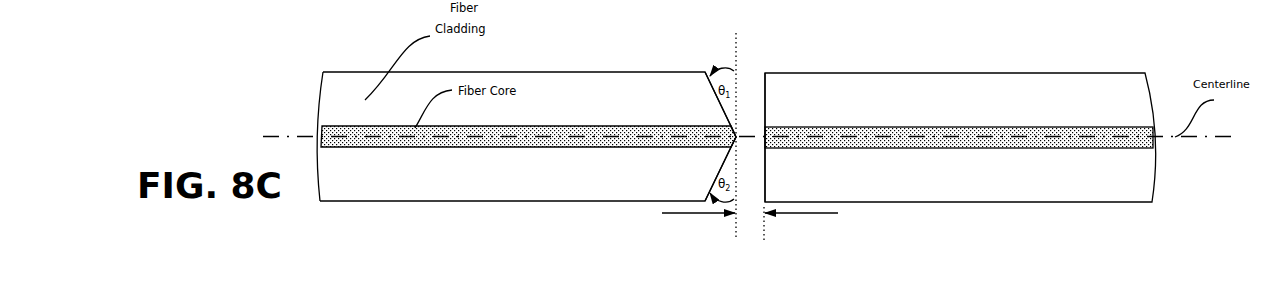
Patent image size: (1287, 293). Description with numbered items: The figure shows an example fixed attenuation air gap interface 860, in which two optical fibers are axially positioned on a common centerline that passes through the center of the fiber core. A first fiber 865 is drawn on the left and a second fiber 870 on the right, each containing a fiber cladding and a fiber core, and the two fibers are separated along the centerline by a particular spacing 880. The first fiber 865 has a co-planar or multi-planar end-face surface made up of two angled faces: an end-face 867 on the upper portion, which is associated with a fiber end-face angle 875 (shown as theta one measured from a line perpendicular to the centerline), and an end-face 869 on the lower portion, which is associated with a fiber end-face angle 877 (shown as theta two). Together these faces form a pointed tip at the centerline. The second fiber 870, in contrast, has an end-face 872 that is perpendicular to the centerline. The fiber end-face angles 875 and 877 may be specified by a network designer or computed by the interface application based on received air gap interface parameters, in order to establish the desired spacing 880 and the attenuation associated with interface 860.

The air gap interface 860 is at (247, 68).
The first fiber 865 is at (526, 136).
The end-face 867 is at (709, 82).
The end-face 869 is at (707, 193).
The fiber end-face angle 875 is at (722, 106).
The fiber end-face angle 877 is at (728, 160).
The second fiber 870 is at (960, 137).
The end-face 872 is at (766, 90).
The spacing 880 is at (750, 228).